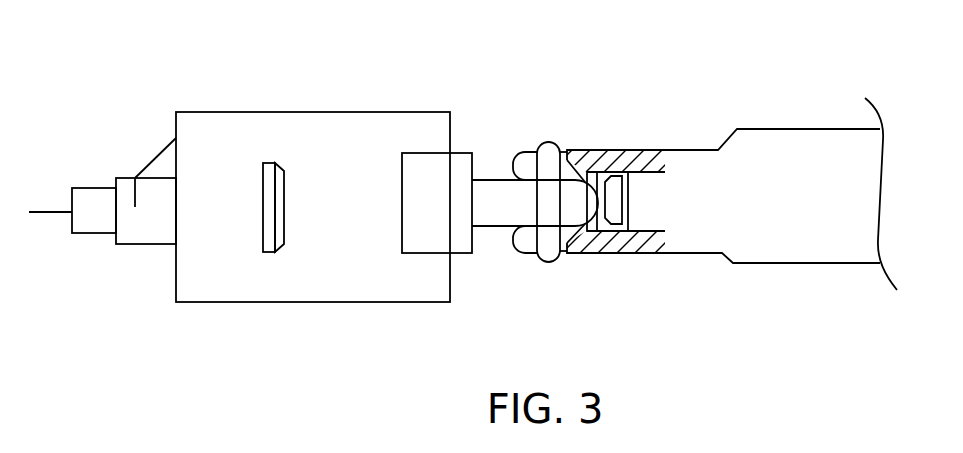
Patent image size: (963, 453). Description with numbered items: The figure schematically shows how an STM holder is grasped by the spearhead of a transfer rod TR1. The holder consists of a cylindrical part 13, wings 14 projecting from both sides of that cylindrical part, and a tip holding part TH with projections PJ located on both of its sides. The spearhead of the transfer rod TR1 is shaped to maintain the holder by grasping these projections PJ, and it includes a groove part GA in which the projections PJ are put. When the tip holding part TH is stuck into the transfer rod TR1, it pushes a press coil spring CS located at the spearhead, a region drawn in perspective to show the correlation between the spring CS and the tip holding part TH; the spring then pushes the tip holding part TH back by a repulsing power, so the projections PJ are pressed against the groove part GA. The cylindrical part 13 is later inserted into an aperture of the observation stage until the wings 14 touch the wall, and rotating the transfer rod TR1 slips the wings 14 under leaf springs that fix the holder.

The cylindrical part 13 is at (355, 150).
The wings 14 is at (273, 193).
The tip holding part TH is at (502, 197).
The projections PJ is at (543, 157).
The press coil spring CS is at (605, 182).
The groove part GA is at (563, 243).
The transfer rod TR1 is at (782, 285).